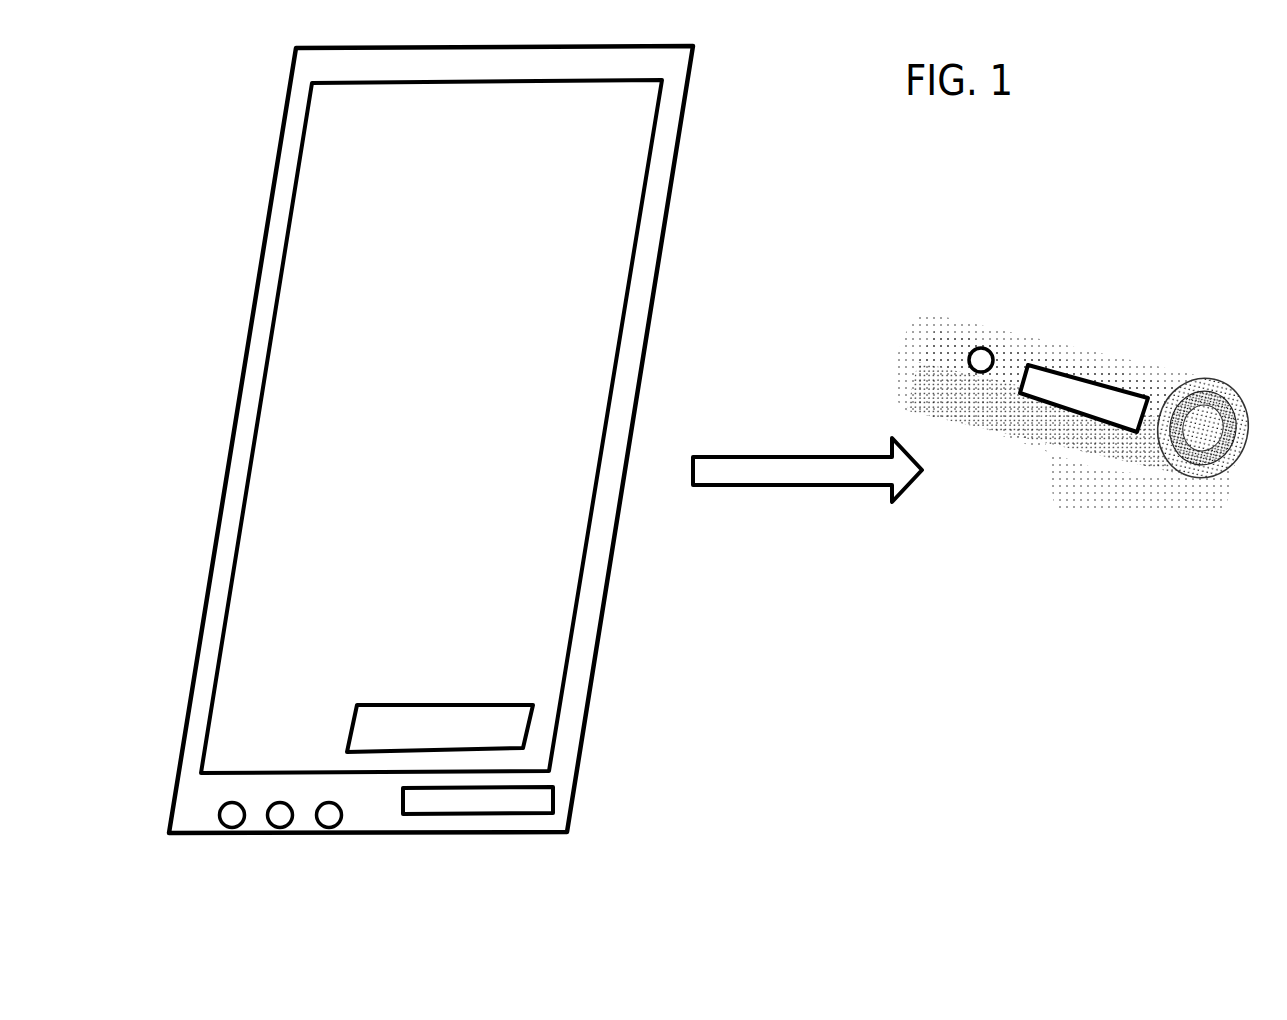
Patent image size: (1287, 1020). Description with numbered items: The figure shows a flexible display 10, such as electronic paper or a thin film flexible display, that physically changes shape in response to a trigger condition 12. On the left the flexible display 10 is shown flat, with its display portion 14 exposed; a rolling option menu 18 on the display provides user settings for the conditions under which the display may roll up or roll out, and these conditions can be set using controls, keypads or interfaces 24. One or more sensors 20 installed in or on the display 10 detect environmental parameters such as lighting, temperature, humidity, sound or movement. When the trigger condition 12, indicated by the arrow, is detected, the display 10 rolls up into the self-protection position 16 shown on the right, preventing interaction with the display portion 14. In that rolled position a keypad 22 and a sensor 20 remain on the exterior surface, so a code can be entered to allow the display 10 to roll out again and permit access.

The flexible display 10 is at (215, 212).
The trigger condition 12 is at (820, 475).
The display portion 14 is at (560, 240).
The self-protection position 16 is at (1173, 367).
The rolling option menu 18 is at (495, 725).
The sensors 20 is at (242, 825).
The keypad 22 is at (1105, 395).
The controls, keypads or interfaces 24 is at (535, 799).